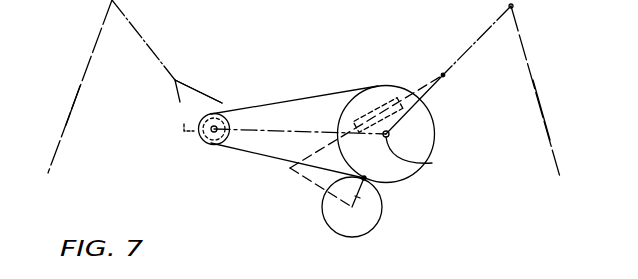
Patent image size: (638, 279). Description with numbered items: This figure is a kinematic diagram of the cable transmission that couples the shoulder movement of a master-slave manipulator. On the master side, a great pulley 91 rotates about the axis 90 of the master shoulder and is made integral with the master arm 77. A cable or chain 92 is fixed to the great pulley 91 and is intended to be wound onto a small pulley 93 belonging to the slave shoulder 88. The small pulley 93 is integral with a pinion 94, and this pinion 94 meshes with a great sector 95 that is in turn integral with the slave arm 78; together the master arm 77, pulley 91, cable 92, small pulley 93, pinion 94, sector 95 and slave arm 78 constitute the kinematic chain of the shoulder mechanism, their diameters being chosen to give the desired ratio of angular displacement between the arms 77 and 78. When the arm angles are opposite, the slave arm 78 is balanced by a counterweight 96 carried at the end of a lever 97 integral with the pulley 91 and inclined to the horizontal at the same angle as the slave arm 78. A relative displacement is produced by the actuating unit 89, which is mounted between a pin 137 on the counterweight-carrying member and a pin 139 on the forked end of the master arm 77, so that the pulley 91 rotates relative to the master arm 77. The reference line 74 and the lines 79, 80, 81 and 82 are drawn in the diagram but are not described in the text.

The center line 74 is at (266, 132).
The master arm 77 is at (472, 45).
The slave arm 78 is at (130, 22).
The apex line 79 is at (510, 18).
The line 80 is at (534, 84).
The line 81 is at (101, 9).
The line 82 is at (64, 124).
The slave shoulder 88 is at (205, 141).
The actuating unit 89 is at (378, 98).
The axis of the master shoulder 90 is at (424, 158).
The great pulley 91 is at (423, 131).
The cable or chain 92 is at (327, 93).
The small pulley 93 is at (202, 136).
The pinion 94 is at (224, 144).
The great sector 95 is at (205, 100).
The counterweight 96 is at (337, 220).
The lever 97 is at (364, 188).
The pin 137 is at (291, 170).
The pin 139 is at (446, 78).